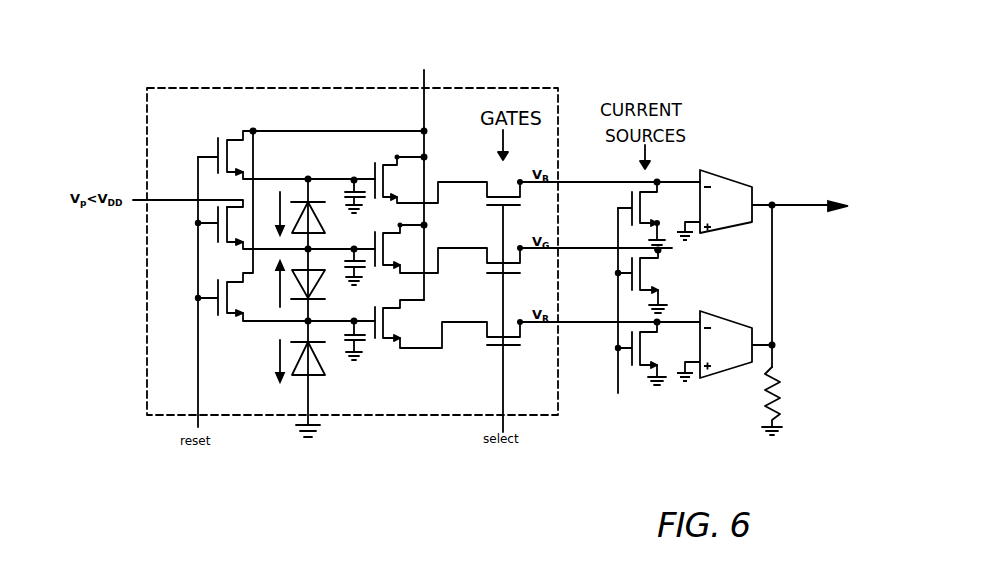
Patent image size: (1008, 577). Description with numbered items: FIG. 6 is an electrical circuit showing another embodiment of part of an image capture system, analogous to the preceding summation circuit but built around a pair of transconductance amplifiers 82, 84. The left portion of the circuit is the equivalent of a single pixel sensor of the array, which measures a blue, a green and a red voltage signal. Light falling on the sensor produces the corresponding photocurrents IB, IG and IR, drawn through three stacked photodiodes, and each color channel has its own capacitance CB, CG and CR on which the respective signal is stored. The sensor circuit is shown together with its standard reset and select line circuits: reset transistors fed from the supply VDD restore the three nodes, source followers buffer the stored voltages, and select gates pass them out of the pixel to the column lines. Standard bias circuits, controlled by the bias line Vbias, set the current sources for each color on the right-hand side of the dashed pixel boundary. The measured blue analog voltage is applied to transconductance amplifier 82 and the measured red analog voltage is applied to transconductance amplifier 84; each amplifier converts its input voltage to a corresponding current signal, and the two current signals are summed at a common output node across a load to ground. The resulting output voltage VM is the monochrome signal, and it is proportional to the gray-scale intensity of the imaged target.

The transconductance amplifier 82 is at (738, 185).
The transconductance amplifier 84 is at (726, 326).
The supply voltage line VDD is at (424, 177).
The blue capacitance CB is at (354, 185).
The green capacitance CG is at (354, 257).
The red capacitance CR is at (354, 331).
The blue photocurrent IB is at (270, 213).
The green photocurrent IG is at (270, 284).
The red photocurrent IR is at (270, 361).
The bias voltage line Vbias is at (620, 309).
The monochrome signal VM is at (810, 225).